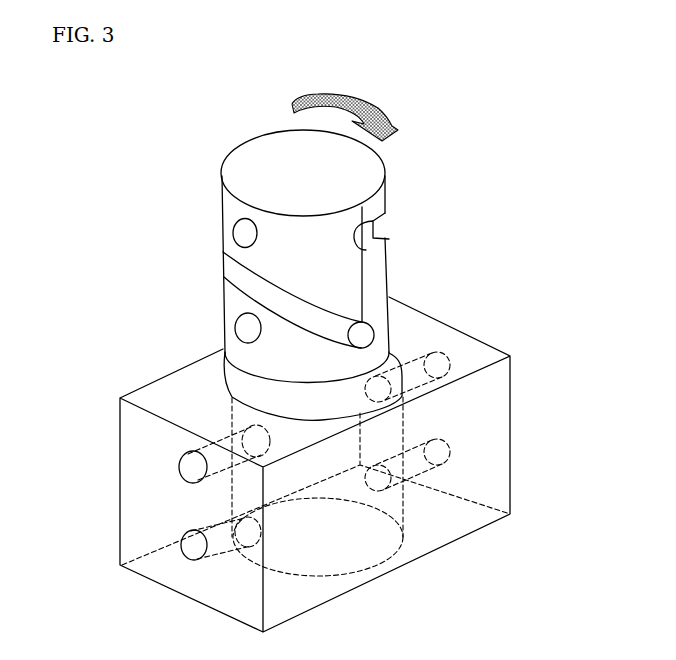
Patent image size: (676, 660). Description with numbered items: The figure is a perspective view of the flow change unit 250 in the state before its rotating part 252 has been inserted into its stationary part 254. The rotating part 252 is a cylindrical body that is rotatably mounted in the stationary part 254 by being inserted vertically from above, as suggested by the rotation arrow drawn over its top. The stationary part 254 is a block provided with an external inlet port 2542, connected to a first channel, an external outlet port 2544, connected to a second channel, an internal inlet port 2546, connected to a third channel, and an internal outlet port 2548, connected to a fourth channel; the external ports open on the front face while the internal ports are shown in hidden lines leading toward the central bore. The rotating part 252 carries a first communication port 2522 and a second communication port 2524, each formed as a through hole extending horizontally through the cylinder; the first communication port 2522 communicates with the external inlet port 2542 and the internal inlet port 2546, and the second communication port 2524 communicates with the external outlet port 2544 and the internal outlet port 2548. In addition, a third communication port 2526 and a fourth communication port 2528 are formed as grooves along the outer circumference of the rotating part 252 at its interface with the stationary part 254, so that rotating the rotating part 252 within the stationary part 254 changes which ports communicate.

The flow change unit 250 is at (62, 178).
The rotating part 252 is at (393, 189).
The first communication port 2522 is at (242, 231).
The second communication port 2524 is at (244, 324).
The third communication port 2526 is at (387, 234).
The fourth communication port 2528 is at (226, 276).
The stationary part 254 is at (488, 346).
The external inlet port 2542 is at (196, 468).
The external outlet port 2544 is at (196, 547).
The internal inlet port 2546 is at (441, 362).
The internal outlet port 2548 is at (441, 454).